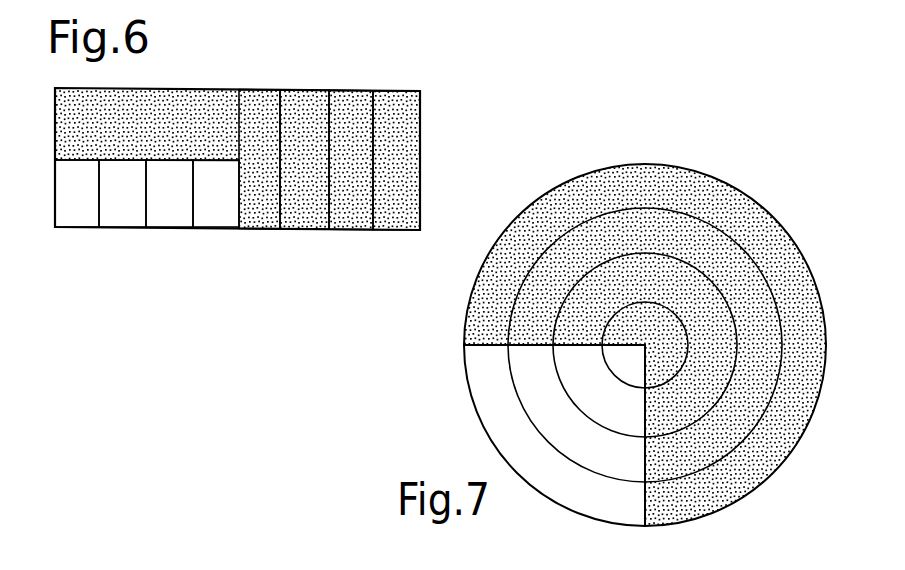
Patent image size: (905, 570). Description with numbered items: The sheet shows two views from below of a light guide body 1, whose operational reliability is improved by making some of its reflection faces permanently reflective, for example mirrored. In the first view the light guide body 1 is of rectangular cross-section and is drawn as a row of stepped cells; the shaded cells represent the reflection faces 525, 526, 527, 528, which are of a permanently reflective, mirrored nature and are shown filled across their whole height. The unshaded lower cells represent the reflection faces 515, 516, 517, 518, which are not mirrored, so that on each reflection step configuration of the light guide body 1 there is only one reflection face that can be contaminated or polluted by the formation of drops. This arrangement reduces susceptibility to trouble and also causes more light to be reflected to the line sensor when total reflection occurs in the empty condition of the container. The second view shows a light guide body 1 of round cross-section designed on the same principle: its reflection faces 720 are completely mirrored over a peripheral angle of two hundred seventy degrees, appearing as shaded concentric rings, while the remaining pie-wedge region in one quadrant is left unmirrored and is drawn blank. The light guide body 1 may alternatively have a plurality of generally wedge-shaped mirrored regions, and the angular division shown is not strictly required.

In FIG. 6, the light guide body 1 is at (266, 164).
In FIG. 7, the light guide body 1 is at (645, 308).
In FIG. 6, the reflection face 515 is at (75, 215).
In FIG. 6, the reflection face 516 is at (123, 215).
In FIG. 6, the reflection face 517 is at (167, 215).
In FIG. 6, the reflection face 518 is at (215, 215).
In FIG. 6, the reflection face 525 is at (398, 91).
In FIG. 6, the reflection face 526 is at (356, 90).
In FIG. 6, the reflection face 527 is at (304, 90).
In FIG. 6, the reflection face 528 is at (262, 90).
In FIG. 7, the reflection faces 720 is at (693, 195).